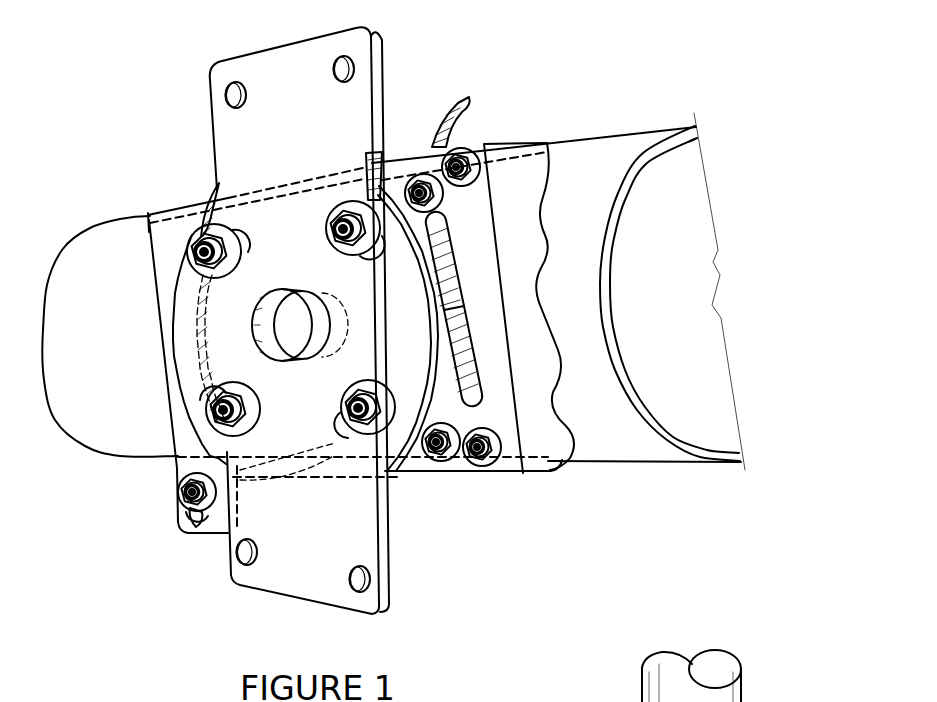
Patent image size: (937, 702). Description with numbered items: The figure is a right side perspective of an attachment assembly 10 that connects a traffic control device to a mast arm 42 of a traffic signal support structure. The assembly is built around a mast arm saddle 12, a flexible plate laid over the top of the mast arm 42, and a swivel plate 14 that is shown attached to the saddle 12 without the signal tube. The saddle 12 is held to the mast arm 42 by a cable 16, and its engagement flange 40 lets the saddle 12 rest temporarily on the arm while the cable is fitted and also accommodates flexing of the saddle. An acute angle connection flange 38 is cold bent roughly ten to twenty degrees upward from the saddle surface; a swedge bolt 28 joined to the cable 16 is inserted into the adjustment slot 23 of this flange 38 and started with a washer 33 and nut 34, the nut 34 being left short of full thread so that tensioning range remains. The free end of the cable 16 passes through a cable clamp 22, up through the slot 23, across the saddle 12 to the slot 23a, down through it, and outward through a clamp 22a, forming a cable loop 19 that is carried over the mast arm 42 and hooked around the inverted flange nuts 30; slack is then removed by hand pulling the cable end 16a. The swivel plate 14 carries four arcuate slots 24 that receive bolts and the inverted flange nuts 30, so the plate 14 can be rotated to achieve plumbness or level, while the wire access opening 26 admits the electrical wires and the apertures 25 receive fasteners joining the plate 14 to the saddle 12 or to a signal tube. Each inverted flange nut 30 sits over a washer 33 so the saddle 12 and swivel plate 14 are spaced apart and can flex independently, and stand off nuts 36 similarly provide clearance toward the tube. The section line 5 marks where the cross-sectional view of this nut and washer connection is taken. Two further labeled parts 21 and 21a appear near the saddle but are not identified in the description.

The attachment assembly 10 is at (765, 275).
The mast arm saddle 12 is at (173, 177).
The swivel plate 14 is at (235, 615).
The cable 16 is at (375, 163).
The cable end 16a is at (465, 110).
The cable loop 19 is at (320, 442).
The curved saddle plate 21 is at (482, 302).
The bracket side edge 21a is at (377, 72).
The cable clamp 22 is at (492, 428).
The clamp 22a is at (455, 197).
The adjustment slot 23 is at (469, 367).
The slot 23a is at (458, 250).
The arcuate slots 24 is at (247, 235).
The apertures 25 is at (366, 583).
The wire access opening 26 is at (267, 317).
The swedge bolt 28 is at (186, 492).
The inverted flange nut 30 is at (396, 387).
The washer 33 is at (228, 250).
The nut 34 is at (480, 145).
The stand off nuts 36 is at (613, 700).
The acute angle connection flange 38 is at (168, 533).
The engagement flange 40 is at (557, 394).
The mast arm 42 is at (637, 392).
The section line 5 is at (337, 511).